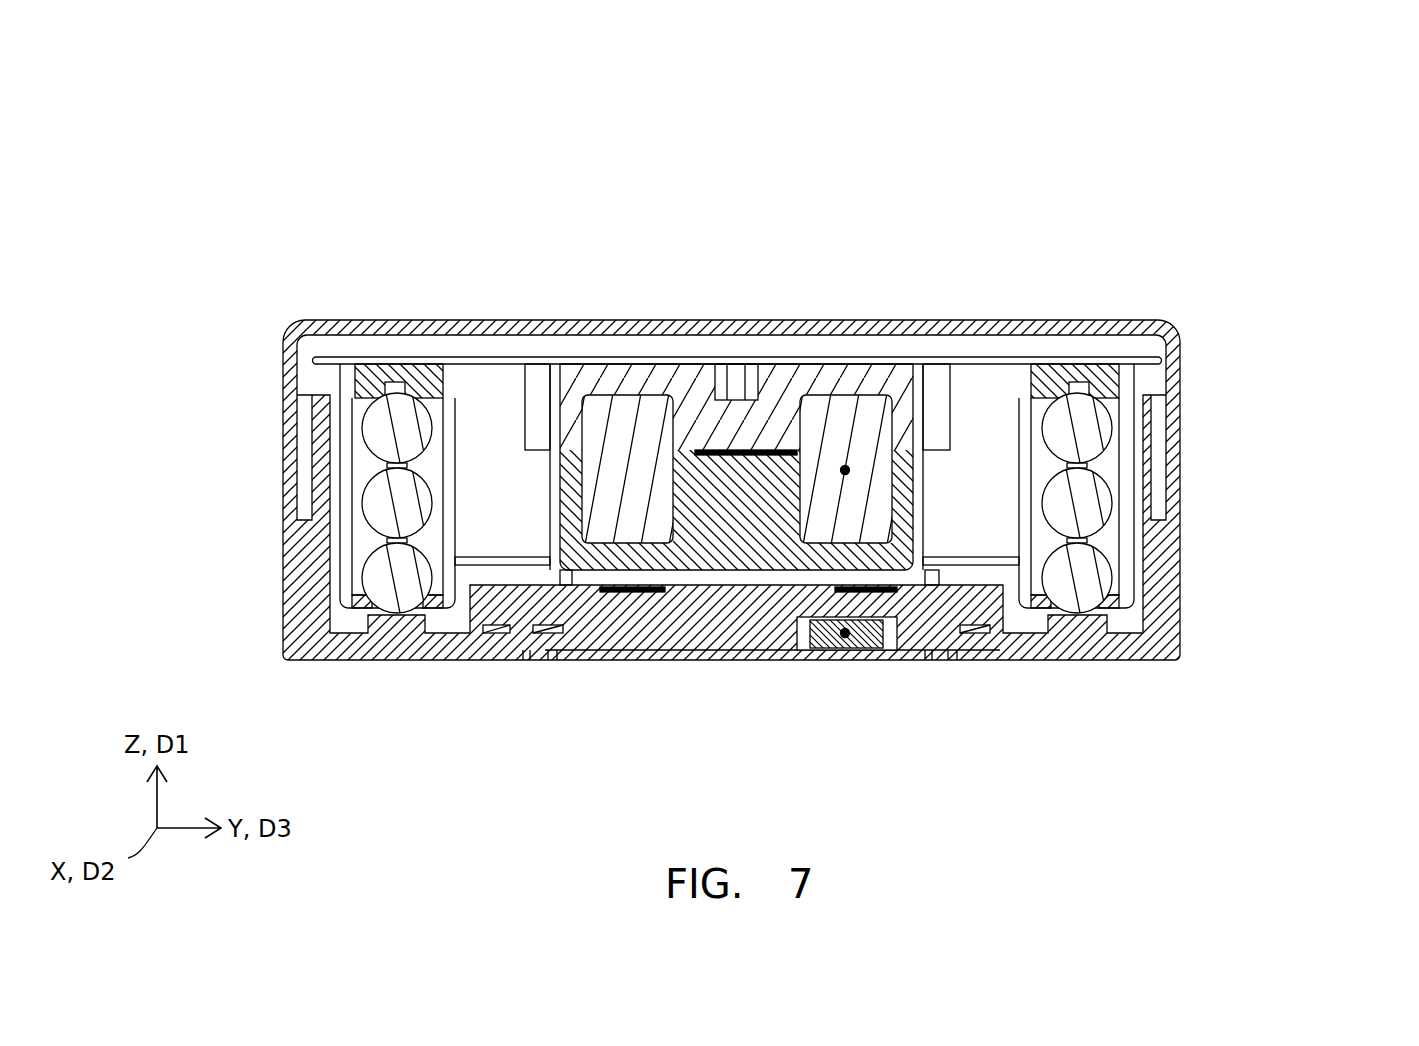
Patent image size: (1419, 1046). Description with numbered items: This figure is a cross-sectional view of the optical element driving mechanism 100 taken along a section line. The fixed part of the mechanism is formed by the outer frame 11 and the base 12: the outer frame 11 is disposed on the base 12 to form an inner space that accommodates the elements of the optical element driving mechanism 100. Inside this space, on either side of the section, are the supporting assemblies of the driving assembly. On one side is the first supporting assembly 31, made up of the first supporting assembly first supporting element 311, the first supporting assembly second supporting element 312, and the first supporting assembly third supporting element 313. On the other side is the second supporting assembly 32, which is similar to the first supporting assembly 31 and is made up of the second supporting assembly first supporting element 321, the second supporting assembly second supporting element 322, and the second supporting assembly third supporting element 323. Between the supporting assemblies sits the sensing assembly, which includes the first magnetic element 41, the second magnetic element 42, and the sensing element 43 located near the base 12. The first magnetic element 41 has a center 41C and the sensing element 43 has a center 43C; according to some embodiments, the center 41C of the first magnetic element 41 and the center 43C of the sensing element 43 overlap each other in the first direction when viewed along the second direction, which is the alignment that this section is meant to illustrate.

The optical element driving mechanism 100 is at (154, 87).
The outer frame 11 is at (506, 326).
The base 12 is at (602, 627).
The first supporting assembly 31 is at (1219, 325).
The first supporting assembly first supporting element 311 is at (1095, 432).
The first supporting assembly second supporting element 312 is at (1095, 578).
The first supporting assembly third supporting element 313 is at (1090, 502).
The second supporting assembly 32 is at (787, 377).
The second supporting assembly first supporting element 321 is at (380, 432).
The second supporting assembly second supporting element 322 is at (380, 578).
The second supporting assembly third supporting element 323 is at (380, 502).
The first magnetic element 41 is at (828, 422).
The center of the first magnetic element 41C is at (845, 470).
The second magnetic element 42 is at (627, 437).
The sensing element 43 is at (862, 636).
The center of the sensing element 43C is at (845, 633).